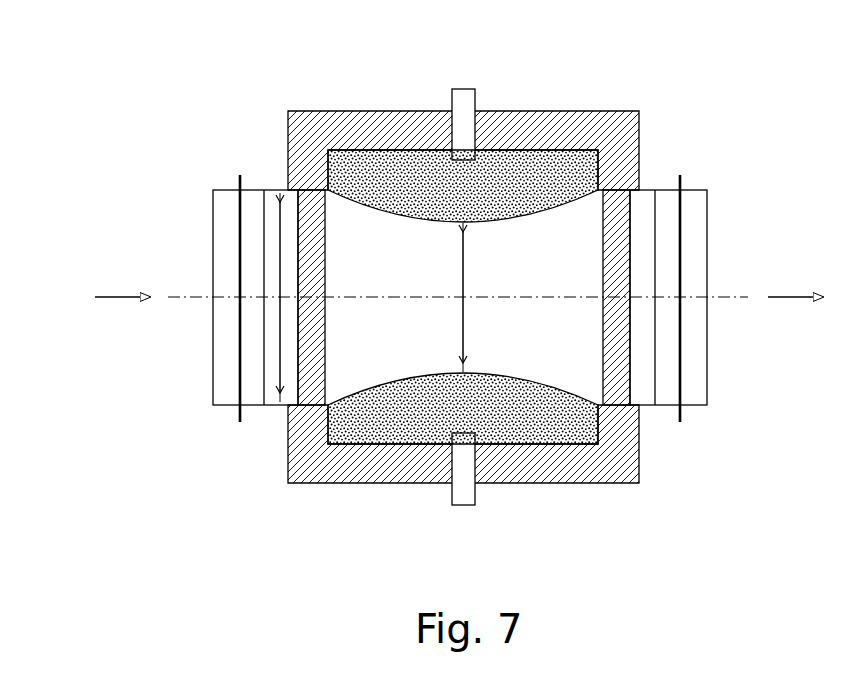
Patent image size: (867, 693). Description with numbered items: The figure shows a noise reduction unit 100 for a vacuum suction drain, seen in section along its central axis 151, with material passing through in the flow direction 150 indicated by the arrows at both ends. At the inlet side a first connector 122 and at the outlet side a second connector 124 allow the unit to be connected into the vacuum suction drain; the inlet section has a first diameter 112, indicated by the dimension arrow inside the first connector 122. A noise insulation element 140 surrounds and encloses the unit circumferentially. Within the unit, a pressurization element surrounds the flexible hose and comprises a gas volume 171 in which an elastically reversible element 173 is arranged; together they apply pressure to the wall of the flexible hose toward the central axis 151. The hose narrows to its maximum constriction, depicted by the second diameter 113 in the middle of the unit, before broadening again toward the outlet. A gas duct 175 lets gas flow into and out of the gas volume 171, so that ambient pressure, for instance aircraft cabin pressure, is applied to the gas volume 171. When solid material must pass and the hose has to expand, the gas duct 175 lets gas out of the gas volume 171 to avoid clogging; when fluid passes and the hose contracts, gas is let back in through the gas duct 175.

The noise reduction unit 100 is at (449, 287).
The first diameter 112 is at (293, 355).
The second diameter 113 is at (463, 340).
The first connector 122 is at (241, 170).
The second connector 124 is at (672, 184).
The noise insulation element 140 is at (566, 102).
The flow direction 150 is at (122, 290).
The central axis 151 is at (175, 300).
The gas volume 171 is at (368, 158).
The elastically reversible element 173 is at (573, 158).
The gas duct 175 is at (468, 104).